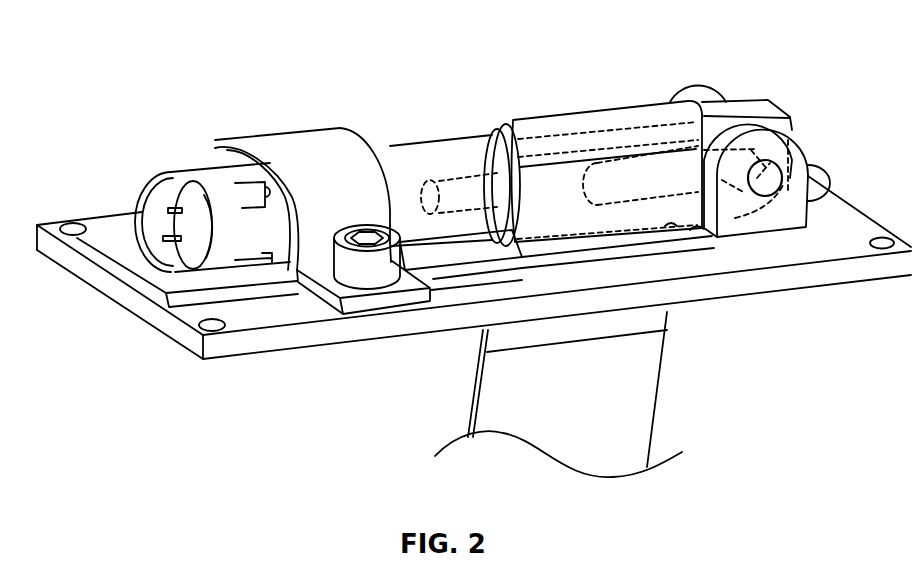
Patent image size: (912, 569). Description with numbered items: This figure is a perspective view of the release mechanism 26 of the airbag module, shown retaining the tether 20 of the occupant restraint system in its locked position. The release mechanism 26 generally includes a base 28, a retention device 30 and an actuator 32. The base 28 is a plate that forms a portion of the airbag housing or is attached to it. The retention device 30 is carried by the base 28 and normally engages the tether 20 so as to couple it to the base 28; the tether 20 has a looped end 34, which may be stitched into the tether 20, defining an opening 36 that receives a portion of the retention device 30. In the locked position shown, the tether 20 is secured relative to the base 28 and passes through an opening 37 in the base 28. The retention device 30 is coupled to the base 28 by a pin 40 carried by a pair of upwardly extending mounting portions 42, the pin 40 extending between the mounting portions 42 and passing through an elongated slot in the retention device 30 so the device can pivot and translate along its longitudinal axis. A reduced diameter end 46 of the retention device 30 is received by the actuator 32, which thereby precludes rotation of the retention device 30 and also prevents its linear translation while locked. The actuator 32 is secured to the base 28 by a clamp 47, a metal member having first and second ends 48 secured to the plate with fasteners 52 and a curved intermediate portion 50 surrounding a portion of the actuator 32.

The tether 20 is at (660, 394).
The release mechanism 26 is at (762, 135).
The base 28 is at (78, 209).
The retention device 30 is at (742, 94).
The actuator 32 is at (407, 148).
The looped end 34 is at (596, 102).
The opening 36 is at (493, 125).
The opening 37 is at (697, 229).
The pin 40 is at (772, 175).
The mounting portions 42 is at (697, 93).
The reduced diameter end 46 is at (447, 168).
The clamp 47 is at (272, 128).
The ends 48 is at (328, 300).
The curved intermediate portion 50 is at (315, 140).
The fasteners 52 is at (375, 280).